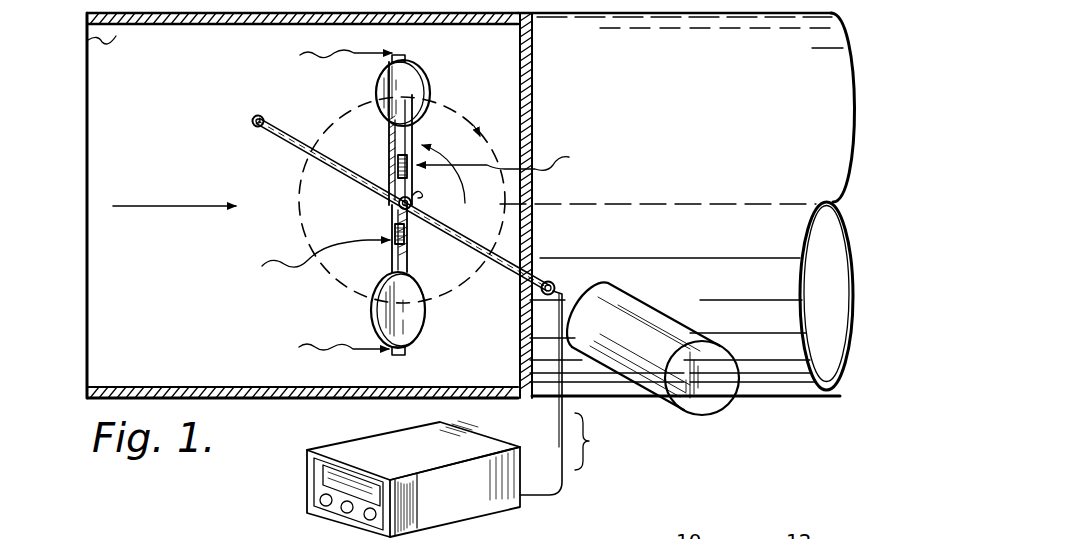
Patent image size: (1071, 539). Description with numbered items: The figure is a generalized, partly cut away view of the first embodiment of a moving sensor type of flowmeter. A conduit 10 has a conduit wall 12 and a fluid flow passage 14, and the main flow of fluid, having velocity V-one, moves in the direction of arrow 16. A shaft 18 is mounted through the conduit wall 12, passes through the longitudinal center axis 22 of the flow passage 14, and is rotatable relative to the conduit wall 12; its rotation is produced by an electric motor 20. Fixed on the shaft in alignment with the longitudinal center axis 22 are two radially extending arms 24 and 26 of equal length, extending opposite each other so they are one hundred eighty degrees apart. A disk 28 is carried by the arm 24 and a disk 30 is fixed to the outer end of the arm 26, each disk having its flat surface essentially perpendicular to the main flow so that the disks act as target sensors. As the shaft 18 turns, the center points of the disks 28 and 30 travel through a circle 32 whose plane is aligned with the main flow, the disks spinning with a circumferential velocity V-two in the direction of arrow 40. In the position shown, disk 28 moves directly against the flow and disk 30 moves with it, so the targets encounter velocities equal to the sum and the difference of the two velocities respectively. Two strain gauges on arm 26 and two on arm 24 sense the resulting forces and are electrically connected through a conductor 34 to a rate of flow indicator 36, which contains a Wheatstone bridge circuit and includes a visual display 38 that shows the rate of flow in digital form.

The conduit 10 is at (814, 144).
The conduit wall 12 is at (848, 60).
The fluid flow passage 14 is at (118, 27).
The arrow 16 is at (169, 207).
The shaft 18 is at (293, 150).
The electric motor 20 is at (702, 412).
The longitudinal center axis 22 is at (643, 207).
The arm 24 is at (394, 260).
The arm 26 is at (388, 142).
The disk 28 is at (421, 316).
The disk 30 is at (385, 83).
The circle 32 is at (299, 227).
The conductor 34 is at (472, 262).
The rate of flow indicator 36 is at (449, 501).
The visual display 38 is at (322, 472).
The arrow 40 is at (424, 137).